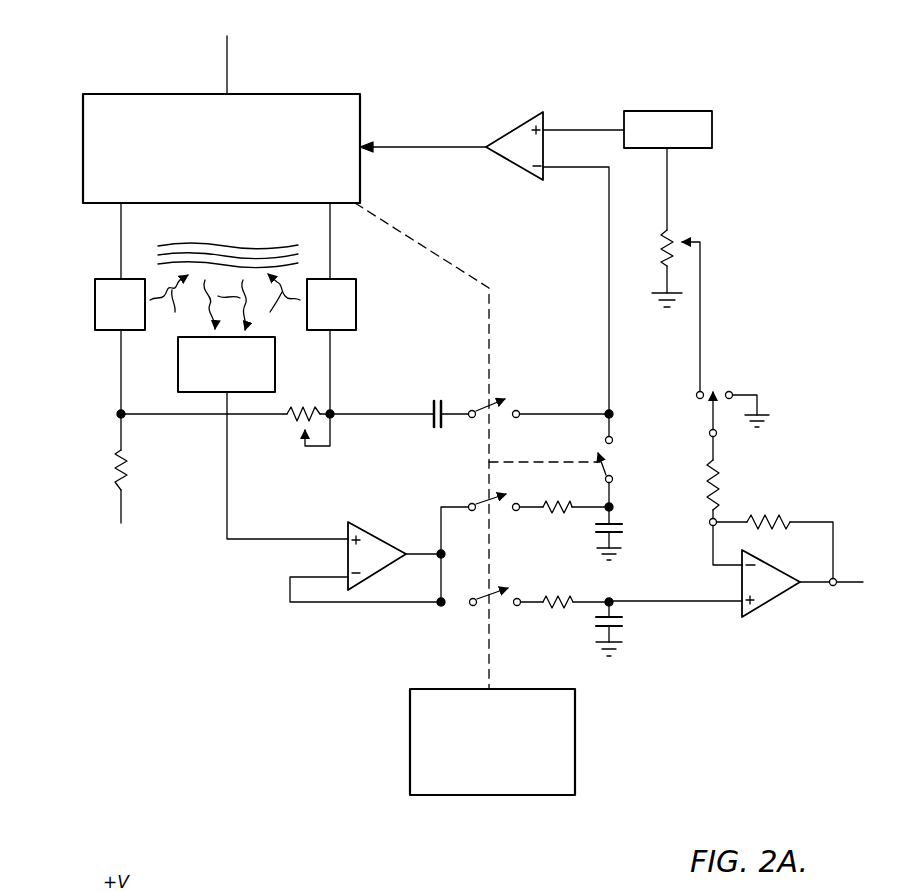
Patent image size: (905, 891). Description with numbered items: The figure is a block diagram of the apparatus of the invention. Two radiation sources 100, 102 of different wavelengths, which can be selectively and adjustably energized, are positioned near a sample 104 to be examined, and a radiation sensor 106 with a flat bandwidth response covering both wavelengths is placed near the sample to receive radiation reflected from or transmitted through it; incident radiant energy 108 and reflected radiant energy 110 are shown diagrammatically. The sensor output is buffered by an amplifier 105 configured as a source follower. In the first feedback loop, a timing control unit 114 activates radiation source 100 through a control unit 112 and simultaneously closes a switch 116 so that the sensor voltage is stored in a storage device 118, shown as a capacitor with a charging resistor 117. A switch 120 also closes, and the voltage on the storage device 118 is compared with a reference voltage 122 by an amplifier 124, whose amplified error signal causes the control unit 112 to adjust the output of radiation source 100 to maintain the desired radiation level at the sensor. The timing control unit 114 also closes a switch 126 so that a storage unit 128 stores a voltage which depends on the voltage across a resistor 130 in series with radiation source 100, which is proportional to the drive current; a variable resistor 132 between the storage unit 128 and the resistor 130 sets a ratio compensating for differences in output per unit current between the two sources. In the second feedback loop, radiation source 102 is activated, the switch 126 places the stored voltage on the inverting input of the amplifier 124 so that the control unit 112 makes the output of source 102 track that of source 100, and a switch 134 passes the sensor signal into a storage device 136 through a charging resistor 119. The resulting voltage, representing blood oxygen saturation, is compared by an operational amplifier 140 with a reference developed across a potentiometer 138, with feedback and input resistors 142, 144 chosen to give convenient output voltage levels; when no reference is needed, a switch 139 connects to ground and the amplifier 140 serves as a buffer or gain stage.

The radiation source 100 is at (95, 281).
The radiation source 102 is at (341, 281).
The sample 104 is at (258, 247).
The operational amplifier 105 is at (370, 530).
The radiation sensor 106 is at (178, 357).
The incident radiant energy 108 is at (225, 304).
The reflected radiant energy 110 is at (227, 302).
The control unit 112 is at (313, 94).
The timing control unit 114 is at (410, 736).
The switch 116 is at (480, 500).
The charging resistor 117 is at (565, 503).
The storage device 118 is at (622, 528).
The charging resistor 119 is at (548, 600).
The switch 120 is at (613, 477).
The reference voltage 122 is at (693, 111).
The amplifier 124 is at (520, 118).
The switch 126 is at (476, 408).
The storage unit 128 is at (438, 400).
The resistor 130 is at (131, 471).
The variable resistor 132 is at (291, 426).
The switch 134 is at (500, 588).
The storage device 136 is at (628, 618).
The potentiometer 138 is at (673, 236).
The switch 139 is at (712, 408).
The operational amplifier 140 is at (780, 600).
The feedback resistor 142 is at (770, 518).
The input resistor 144 is at (720, 470).